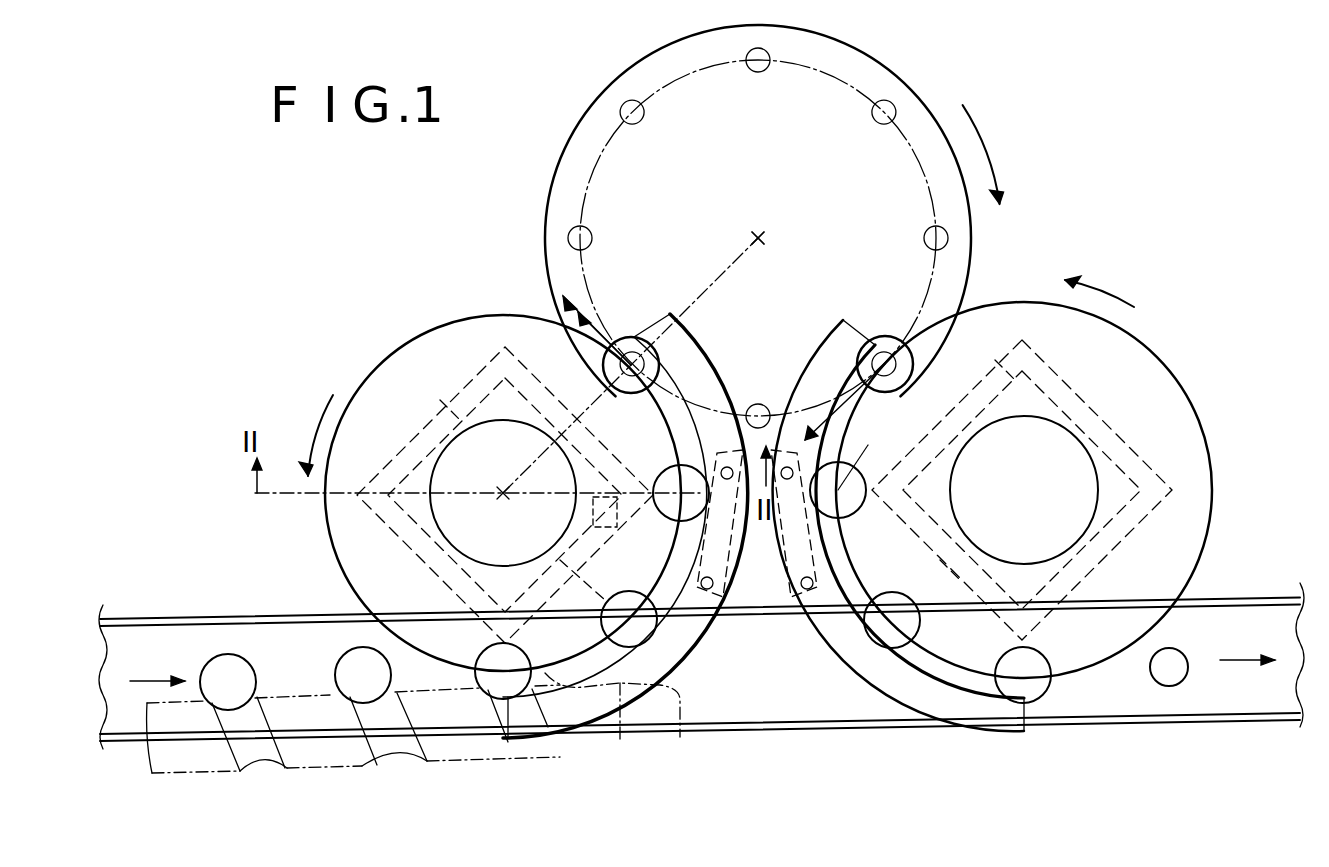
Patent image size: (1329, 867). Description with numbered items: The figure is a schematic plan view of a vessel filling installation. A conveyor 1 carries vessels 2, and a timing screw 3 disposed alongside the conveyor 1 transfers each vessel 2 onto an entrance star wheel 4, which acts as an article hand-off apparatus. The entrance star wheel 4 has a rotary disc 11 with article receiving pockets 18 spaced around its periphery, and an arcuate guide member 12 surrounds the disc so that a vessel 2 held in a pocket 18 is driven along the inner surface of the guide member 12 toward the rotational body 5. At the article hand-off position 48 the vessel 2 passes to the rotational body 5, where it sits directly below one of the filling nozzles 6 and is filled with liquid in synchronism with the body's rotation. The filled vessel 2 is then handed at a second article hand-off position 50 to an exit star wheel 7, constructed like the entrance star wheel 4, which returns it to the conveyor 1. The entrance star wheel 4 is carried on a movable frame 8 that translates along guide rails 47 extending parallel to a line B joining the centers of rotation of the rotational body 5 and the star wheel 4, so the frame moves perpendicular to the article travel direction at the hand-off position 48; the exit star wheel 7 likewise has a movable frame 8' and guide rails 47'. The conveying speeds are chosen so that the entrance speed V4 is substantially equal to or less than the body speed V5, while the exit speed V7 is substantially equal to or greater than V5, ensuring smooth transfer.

The conveyor 1 is at (170, 635).
The vessels 2 is at (340, 670).
The timing screw 3 is at (354, 778).
The entrance star wheel 4 is at (396, 332).
The rotational body 5 is at (915, 95).
The filling nozzles 6 is at (890, 355).
The exit star wheel 7 is at (1203, 411).
The movable frame 8 is at (501, 495).
The movable frame 8' is at (1074, 490).
The rotary disc 11 is at (327, 548).
The arcuate guide member 12 is at (699, 646).
The article receiving pockets 18 is at (627, 609).
The guide rails 47 is at (491, 512).
The guide rails 47' is at (1020, 476).
The article hand-off position 48 is at (640, 339).
The article hand-off position 50 is at (884, 338).
The line B is at (748, 238).
The conveying speed V4 is at (542, 330).
The article conveying speed V5 is at (563, 304).
The conveying speed V7 is at (837, 390).